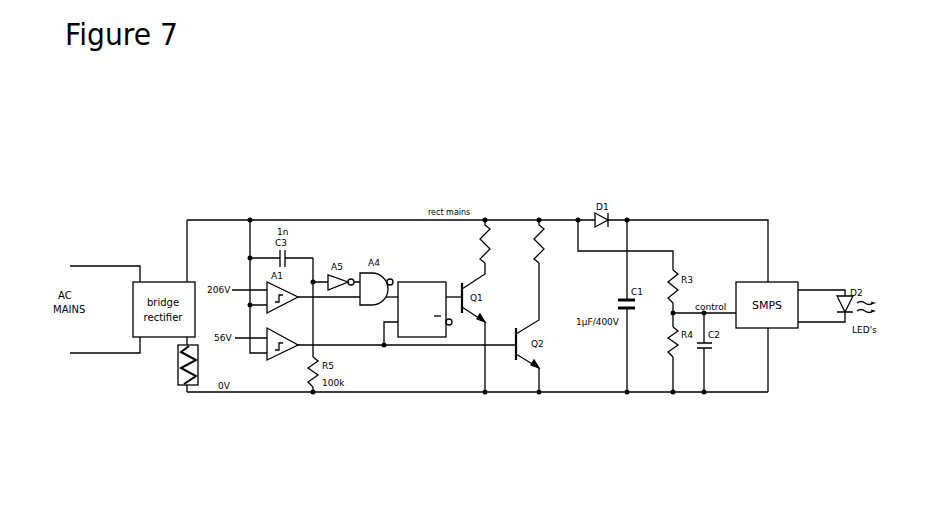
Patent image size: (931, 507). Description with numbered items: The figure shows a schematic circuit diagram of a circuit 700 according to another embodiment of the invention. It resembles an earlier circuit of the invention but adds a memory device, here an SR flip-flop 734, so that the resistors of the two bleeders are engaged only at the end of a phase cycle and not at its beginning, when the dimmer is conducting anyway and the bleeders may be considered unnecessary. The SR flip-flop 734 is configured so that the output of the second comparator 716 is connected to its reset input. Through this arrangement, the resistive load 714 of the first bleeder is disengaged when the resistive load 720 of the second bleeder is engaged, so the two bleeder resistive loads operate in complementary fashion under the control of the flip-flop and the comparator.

The circuit 700 is at (543, 123).
The resistive load of the first bleeder 714 is at (485, 257).
The second comparator 716 is at (280, 352).
The resistive load of the second bleeder 720 is at (543, 235).
The SR flip-flop 734 is at (425, 337).